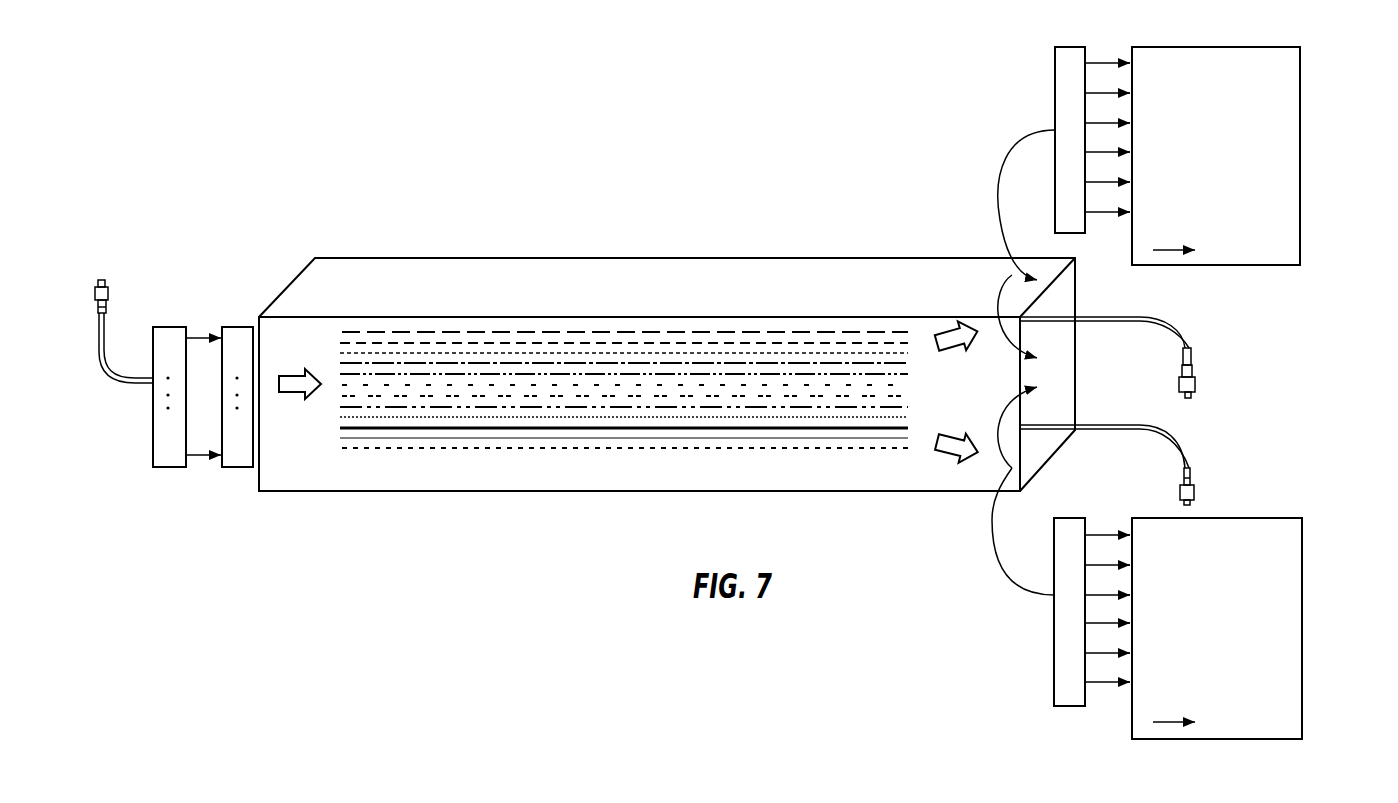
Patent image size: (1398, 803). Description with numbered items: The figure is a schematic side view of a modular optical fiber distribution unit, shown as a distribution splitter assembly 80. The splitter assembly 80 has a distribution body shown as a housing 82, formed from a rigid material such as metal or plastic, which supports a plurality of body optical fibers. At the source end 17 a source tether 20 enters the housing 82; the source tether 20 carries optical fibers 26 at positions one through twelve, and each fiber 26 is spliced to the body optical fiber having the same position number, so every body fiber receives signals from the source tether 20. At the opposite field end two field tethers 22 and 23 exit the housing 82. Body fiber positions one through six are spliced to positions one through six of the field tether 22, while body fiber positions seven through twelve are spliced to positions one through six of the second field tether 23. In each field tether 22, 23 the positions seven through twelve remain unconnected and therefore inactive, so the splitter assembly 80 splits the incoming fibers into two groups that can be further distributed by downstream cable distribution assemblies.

The source end 17 is at (220, 222).
The source tether 20 is at (103, 377).
The field tether 22 is at (1190, 345).
The second field tether 23 is at (1190, 460).
The optical fibers of source tether 26 is at (170, 327).
The distribution splitter assembly 80 is at (888, 90).
The housing 82 is at (685, 275).